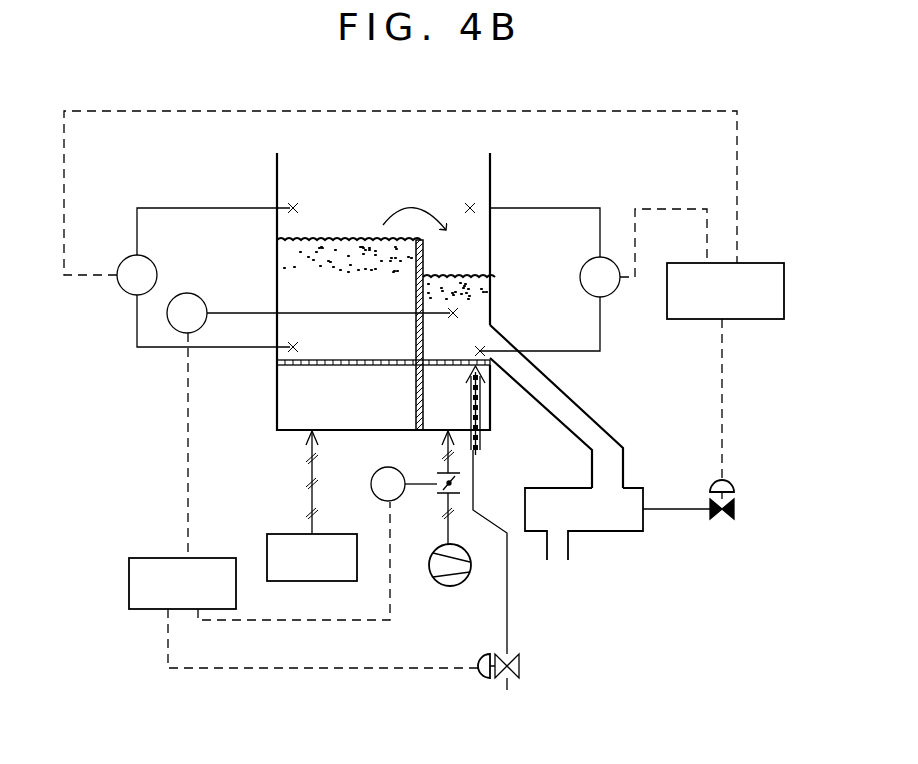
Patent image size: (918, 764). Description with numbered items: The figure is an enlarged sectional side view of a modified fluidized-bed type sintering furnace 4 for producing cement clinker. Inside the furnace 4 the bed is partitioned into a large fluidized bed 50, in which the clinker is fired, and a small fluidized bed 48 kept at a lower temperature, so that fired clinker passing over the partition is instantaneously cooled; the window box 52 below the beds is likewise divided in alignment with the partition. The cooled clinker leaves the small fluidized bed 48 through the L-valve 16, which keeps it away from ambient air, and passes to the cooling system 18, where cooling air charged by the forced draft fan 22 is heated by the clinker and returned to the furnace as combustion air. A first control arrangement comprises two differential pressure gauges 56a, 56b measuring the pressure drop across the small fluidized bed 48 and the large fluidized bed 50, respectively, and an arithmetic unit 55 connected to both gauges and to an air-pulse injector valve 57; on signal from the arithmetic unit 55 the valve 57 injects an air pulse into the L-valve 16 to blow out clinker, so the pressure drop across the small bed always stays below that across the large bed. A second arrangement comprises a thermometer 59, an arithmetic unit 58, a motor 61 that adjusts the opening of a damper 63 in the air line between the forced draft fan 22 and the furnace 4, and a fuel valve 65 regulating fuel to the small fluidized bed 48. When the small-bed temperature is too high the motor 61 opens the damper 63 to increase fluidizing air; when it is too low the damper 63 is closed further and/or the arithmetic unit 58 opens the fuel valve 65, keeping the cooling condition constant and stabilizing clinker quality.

The fluidized-bed type sintering furnace 4 is at (491, 167).
The L-valve 16 is at (646, 533).
The cooling system 18 is at (285, 533).
The forced draft fan 22 is at (450, 586).
The small fluidized bed 48 is at (459, 312).
The large fluidized bed 50 is at (349, 293).
The window box 52 is at (288, 412).
The arithmetic unit 55 is at (757, 263).
The differential pressure gauge 56a is at (151, 262).
The differential pressure gauge 56b is at (580, 274).
The air-pulse injector valve 57 is at (731, 480).
The arithmetic unit 58 is at (149, 557).
The thermometer 59 is at (203, 299).
The motor 61 is at (377, 477).
The damper 63 is at (480, 472).
The fuel valve 65 is at (518, 648).